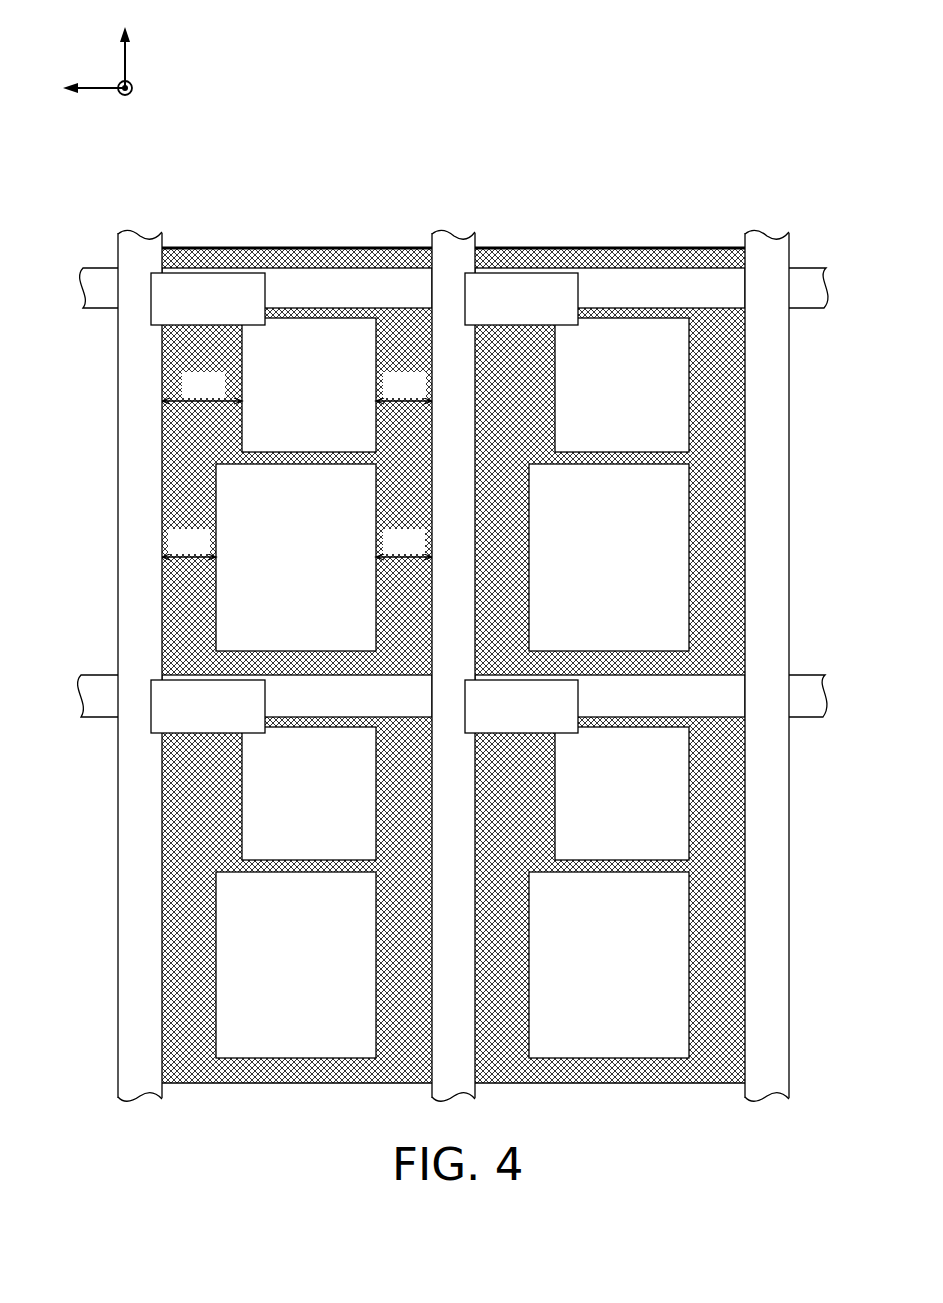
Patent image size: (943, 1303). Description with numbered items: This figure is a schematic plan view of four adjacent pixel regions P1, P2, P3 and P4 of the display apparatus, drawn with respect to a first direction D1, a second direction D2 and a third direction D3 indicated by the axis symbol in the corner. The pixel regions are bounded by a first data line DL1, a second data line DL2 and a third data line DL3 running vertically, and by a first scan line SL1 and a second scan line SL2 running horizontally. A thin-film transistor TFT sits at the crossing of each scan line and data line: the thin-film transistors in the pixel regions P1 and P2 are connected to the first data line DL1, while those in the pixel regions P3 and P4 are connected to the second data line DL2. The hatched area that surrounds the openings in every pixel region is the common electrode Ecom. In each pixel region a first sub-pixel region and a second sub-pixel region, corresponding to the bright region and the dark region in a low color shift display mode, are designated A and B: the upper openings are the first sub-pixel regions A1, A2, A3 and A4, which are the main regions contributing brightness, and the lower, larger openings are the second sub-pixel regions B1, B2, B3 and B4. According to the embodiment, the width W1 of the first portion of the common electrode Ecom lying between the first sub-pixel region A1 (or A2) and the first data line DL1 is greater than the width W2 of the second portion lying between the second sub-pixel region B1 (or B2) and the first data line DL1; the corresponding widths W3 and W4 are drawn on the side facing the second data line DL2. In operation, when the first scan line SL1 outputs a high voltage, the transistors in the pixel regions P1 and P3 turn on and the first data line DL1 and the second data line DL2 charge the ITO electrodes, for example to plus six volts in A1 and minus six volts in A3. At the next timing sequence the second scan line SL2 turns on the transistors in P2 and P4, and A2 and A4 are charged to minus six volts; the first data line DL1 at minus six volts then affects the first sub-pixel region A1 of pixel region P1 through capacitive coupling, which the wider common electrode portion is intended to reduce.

The first direction D1 is at (79, 89).
The second direction D2 is at (127, 44).
The third direction D3 is at (127, 101).
The first scan line SL1 is at (99, 285).
The second scan line SL2 is at (101, 690).
The first data line DL1 is at (140, 255).
The second data line DL2 is at (455, 255).
The third data line DL3 is at (768, 255).
The thin film transistor TFT is at (216, 285).
The common electrode Ecom is at (307, 250).
The pixel region P1 is at (254, 484).
The pixel region P2 is at (224, 892).
The pixel region P3 is at (683, 484).
The pixel region P4 is at (683, 892).
The first sub-pixel region A1 is at (309, 385).
The second sub-pixel region B1 is at (296, 557).
The first sub-pixel region A2 is at (309, 793).
The second sub-pixel region B2 is at (296, 965).
The first sub-pixel region A3 is at (622, 385).
The second sub-pixel region B3 is at (609, 557).
The first sub-pixel region A4 is at (622, 793).
The second sub-pixel region B4 is at (609, 965).
The width of the first portion of the common electrode W1 is at (202, 388).
The width of the second portion of the common electrode W2 is at (189, 544).
The third width W3 is at (404, 388).
The fourth width W4 is at (404, 544).